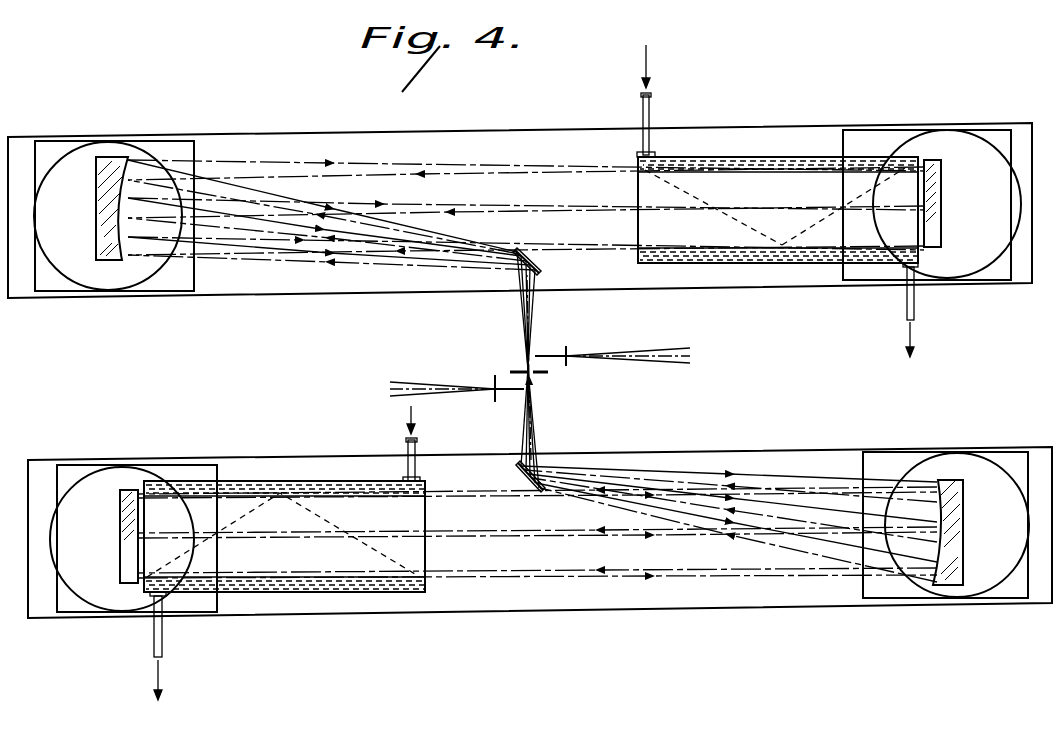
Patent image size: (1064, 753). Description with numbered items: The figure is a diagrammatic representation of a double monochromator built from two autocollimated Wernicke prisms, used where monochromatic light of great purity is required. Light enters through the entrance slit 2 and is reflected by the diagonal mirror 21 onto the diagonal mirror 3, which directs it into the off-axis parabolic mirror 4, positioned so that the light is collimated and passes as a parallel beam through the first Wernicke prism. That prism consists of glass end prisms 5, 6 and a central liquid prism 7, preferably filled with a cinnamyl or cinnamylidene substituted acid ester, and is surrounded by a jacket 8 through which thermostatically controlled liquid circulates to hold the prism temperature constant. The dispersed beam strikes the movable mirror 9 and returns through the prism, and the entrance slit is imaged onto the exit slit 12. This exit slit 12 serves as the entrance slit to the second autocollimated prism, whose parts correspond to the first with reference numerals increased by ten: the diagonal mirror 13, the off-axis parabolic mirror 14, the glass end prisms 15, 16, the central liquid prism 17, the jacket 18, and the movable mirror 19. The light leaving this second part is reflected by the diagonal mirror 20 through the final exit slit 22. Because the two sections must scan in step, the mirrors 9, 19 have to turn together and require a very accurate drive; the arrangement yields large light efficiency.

The entrance slit 2 is at (494, 400).
The diagonal mirror 3 is at (518, 470).
The off-axis parabolic mirror 4 is at (945, 586).
The glass end prism 5 is at (350, 510).
The glass end prism 6 is at (188, 515).
The central liquid prism 7 is at (277, 515).
The jacket 8 is at (305, 593).
The movable mirror 9 is at (127, 490).
The exit slit 12 is at (511, 370).
The diagonal mirror 13 is at (541, 262).
The off-axis parabolic mirror 14 is at (110, 157).
The glass end prism 15 is at (703, 226).
The glass end prism 16 is at (830, 234).
The central liquid prism 17 is at (778, 210).
The jacket 18 is at (748, 156).
The movable mirror 19 is at (934, 160).
The diagonal mirror 20 is at (538, 356).
The diagonal mirror 21 is at (526, 386).
The final exit slit 22 is at (568, 365).